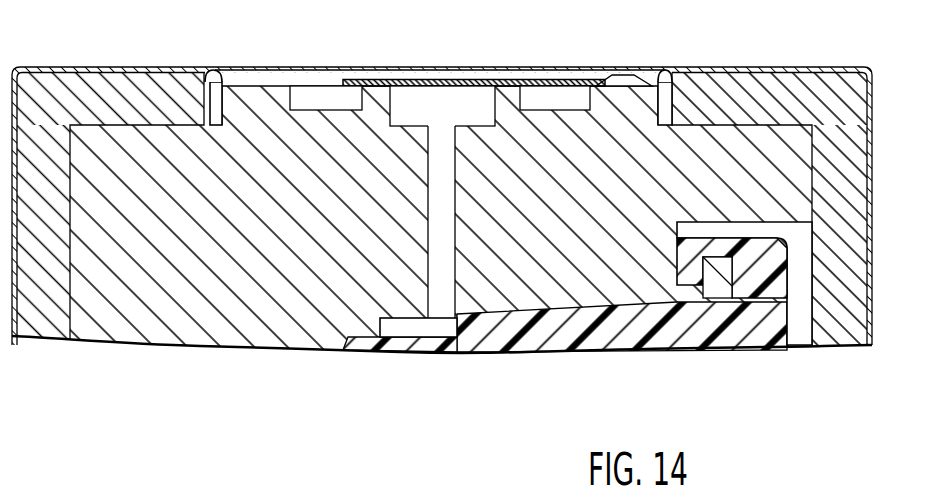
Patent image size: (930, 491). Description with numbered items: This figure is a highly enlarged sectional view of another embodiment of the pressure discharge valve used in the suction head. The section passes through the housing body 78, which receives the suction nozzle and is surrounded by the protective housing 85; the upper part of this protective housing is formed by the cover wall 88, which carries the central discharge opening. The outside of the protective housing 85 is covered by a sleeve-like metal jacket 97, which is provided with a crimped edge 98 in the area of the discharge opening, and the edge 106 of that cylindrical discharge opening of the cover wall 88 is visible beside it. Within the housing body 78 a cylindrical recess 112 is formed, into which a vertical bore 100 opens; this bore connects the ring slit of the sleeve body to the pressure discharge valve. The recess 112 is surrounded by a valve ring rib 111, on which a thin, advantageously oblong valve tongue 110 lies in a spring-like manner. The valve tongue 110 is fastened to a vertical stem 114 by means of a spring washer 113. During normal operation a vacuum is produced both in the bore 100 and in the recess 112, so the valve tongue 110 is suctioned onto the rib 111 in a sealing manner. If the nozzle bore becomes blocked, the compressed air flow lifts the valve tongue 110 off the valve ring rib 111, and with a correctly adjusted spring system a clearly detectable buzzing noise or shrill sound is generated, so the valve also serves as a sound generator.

The housing body 78 is at (183, 323).
The protective housing 85 is at (842, 330).
The cover wall 88 is at (793, 87).
The metal jacket 97 is at (68, 66).
The crimped edge 98 is at (219, 68).
The vertical bore 100 is at (440, 298).
The edge 106 is at (180, 90).
The valve tongue 110 is at (477, 78).
The valve ring rib 111 is at (378, 90).
The cylindrical recess 112 is at (433, 107).
The spring washer 113 is at (603, 78).
The vertical stem 114 is at (627, 77).